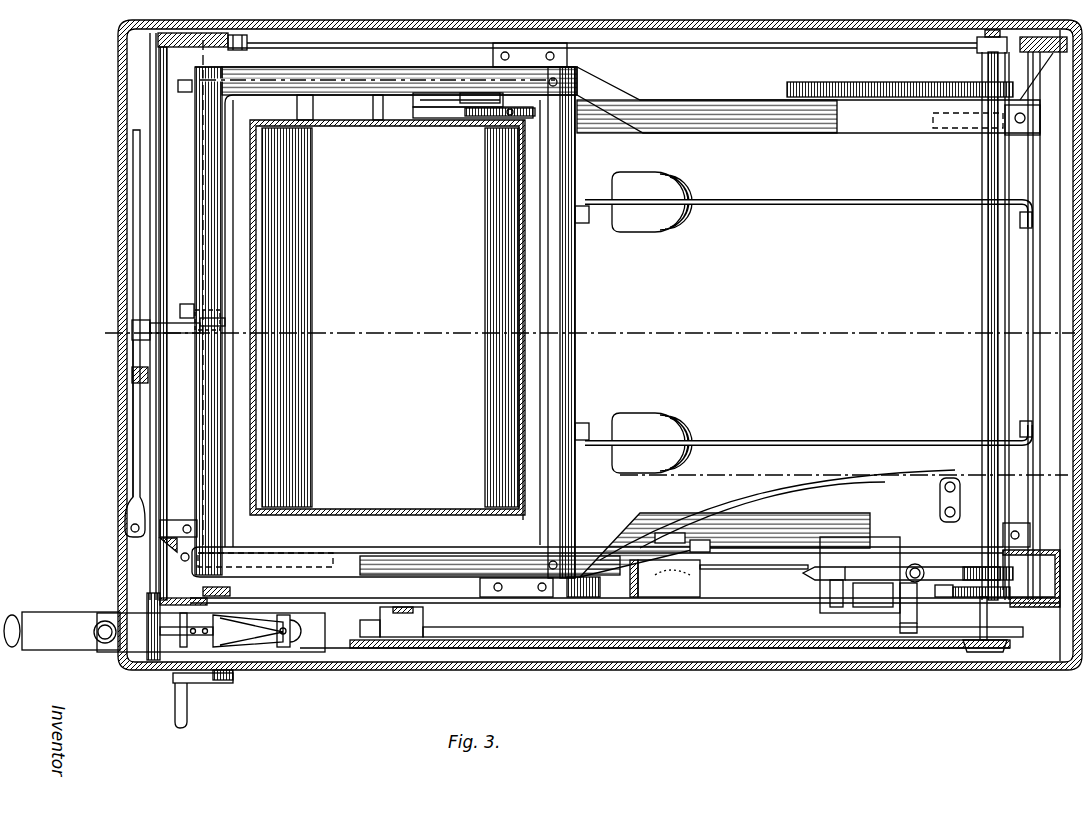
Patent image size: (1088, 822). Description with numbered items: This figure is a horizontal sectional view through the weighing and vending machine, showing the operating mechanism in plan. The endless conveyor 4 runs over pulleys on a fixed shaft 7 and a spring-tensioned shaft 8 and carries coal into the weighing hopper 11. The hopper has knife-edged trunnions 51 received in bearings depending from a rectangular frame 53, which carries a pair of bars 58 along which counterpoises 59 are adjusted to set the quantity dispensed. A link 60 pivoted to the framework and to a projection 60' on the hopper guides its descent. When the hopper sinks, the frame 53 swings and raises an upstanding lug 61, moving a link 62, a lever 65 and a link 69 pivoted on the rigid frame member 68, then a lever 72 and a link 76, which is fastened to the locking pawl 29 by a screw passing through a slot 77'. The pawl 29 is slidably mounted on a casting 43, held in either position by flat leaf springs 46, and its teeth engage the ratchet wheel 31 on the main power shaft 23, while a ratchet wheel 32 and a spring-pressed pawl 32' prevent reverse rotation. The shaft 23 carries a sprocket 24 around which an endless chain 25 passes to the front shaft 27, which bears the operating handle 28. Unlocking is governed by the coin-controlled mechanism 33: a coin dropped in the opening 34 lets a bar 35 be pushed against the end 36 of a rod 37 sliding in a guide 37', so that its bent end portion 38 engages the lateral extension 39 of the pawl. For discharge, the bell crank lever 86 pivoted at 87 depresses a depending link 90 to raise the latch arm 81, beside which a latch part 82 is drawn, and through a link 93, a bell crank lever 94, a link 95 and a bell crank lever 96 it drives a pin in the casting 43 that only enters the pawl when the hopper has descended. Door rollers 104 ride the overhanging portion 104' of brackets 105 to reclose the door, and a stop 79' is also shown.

The shaft 7 is at (126, 272).
The link 60 is at (164, 83).
The projection 60' is at (386, 321).
The knife-edged trunnions 51 is at (376, 104).
The overhanging portion 104' is at (466, 125).
The rollers 104 is at (395, 322).
The brackets 105 is at (532, 112).
The weighing hopper 11 is at (498, 286).
The counterpoises 59 is at (684, 222).
The bars 58 is at (806, 204).
The main power shaft 23 is at (982, 280).
The stop 79' is at (1022, 65).
The shaft 8 is at (112, 322).
The endless conveyor 4 is at (637, 489).
The link 93 is at (135, 448).
The bell crank lever 94 is at (168, 545).
The depending link 90 is at (150, 326).
The bell crank lever 86 is at (140, 358).
The pivot 87 is at (135, 383).
The block 82 is at (245, 313).
The latch arm 81 is at (245, 328).
The rectangular frame 53 is at (444, 560).
The shaft 27 is at (236, 546).
The lever 65 is at (662, 540).
The link 62 is at (700, 540).
The rigid frame member 68 is at (634, 598).
The link 69 is at (692, 598).
The lever 72 is at (740, 570).
The link 76 is at (815, 582).
The slot 77' is at (922, 548).
The locking pawl 29 is at (940, 567).
The ratchet wheel 31 is at (1013, 573).
The ratchet wheel 32 is at (988, 592).
The upstanding lug 61 is at (1003, 553).
The spring-pressed pawl 32' is at (1003, 618).
The sprocket 24 is at (1007, 648).
The flat leaf springs 46 is at (845, 595).
The casting 43 is at (868, 607).
The lateral extension 39 is at (917, 618).
The bent end portion 38 is at (917, 632).
The link 95 is at (870, 480).
The bell crank lever 96 is at (970, 466).
The rod 37 is at (723, 664).
The endless chain 25 is at (712, 650).
The guide 37' is at (418, 620).
The end 36 is at (370, 620).
The bar 35 is at (52, 650).
The opening 34 is at (104, 640).
The coin-controlled mechanism 33 is at (175, 640).
The operating handle 28 is at (205, 683).